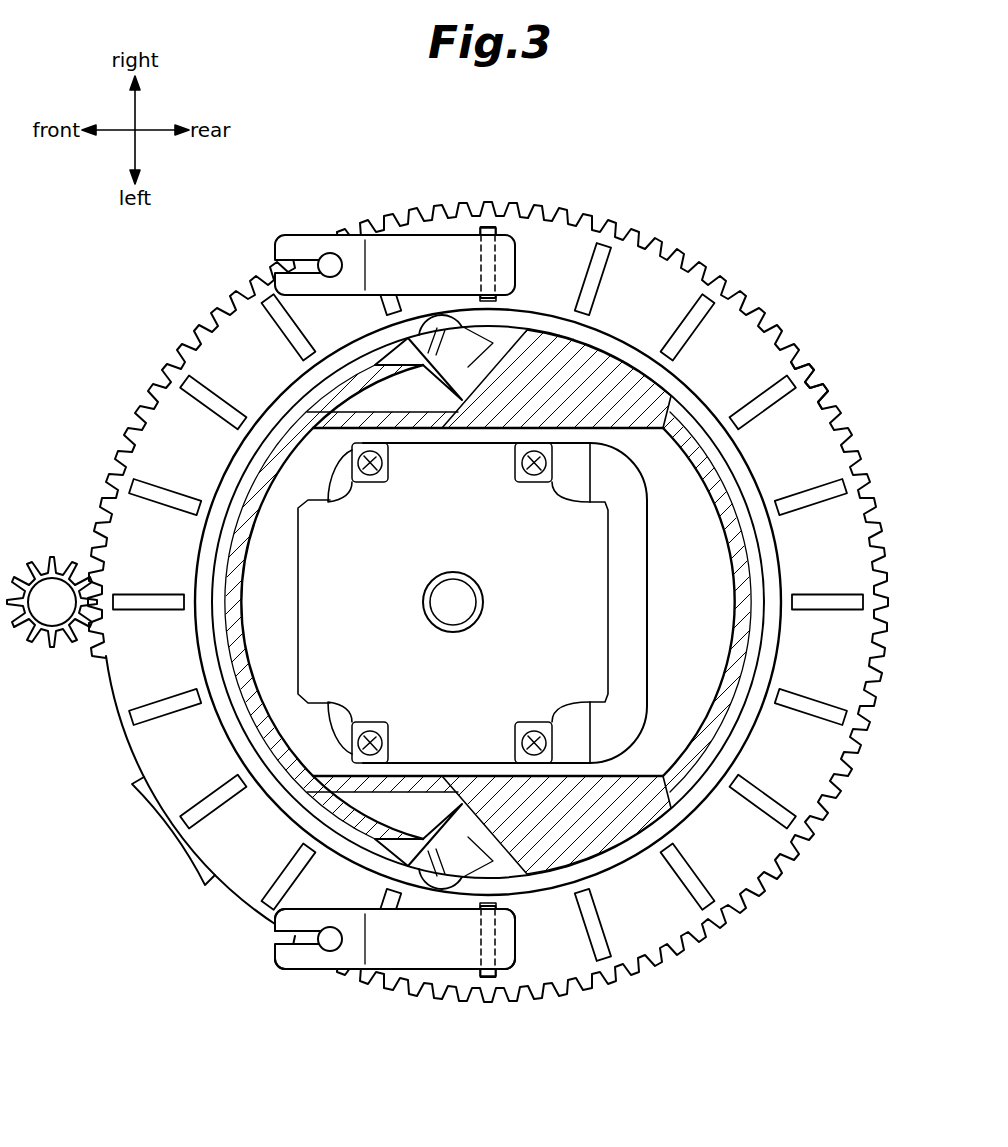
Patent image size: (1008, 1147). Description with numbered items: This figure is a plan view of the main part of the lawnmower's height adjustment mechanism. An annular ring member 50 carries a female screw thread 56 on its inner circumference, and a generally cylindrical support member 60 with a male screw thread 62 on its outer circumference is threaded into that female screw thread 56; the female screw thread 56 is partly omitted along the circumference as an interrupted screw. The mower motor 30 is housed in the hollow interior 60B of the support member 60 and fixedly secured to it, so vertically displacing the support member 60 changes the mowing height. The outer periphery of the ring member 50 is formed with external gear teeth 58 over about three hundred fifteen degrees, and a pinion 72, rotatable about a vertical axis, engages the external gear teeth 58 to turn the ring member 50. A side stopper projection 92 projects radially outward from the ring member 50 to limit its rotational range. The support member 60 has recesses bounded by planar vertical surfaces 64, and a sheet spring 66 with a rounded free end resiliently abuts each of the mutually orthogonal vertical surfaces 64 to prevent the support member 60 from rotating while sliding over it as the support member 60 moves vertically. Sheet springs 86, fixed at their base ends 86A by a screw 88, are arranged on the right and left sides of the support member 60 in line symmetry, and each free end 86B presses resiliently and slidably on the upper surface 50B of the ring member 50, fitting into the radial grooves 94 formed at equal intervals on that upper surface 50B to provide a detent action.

The mower motor 30 is at (645, 634).
The annular ring member 50 is at (459, 602).
The upper surface of the ring member 50B is at (806, 383).
The female screw thread 56 is at (757, 623).
The external gear teeth 58 is at (790, 346).
The support member 60 is at (718, 717).
The hollow interior of the support member 60B is at (708, 588).
The male screw thread 62 is at (720, 463).
The vertical surfaces 64 is at (522, 330).
The sheet spring (second elastic member) 66 is at (467, 345).
The pinion 72 is at (38, 648).
The sheet spring (first elastic member) 86 is at (411, 248).
The base end of the sheet spring 86A is at (330, 962).
The free end of the sheet spring 86B is at (501, 962).
The screw 88 is at (330, 253).
The side stopper projection 92 is at (152, 808).
The groove 94 is at (489, 228).